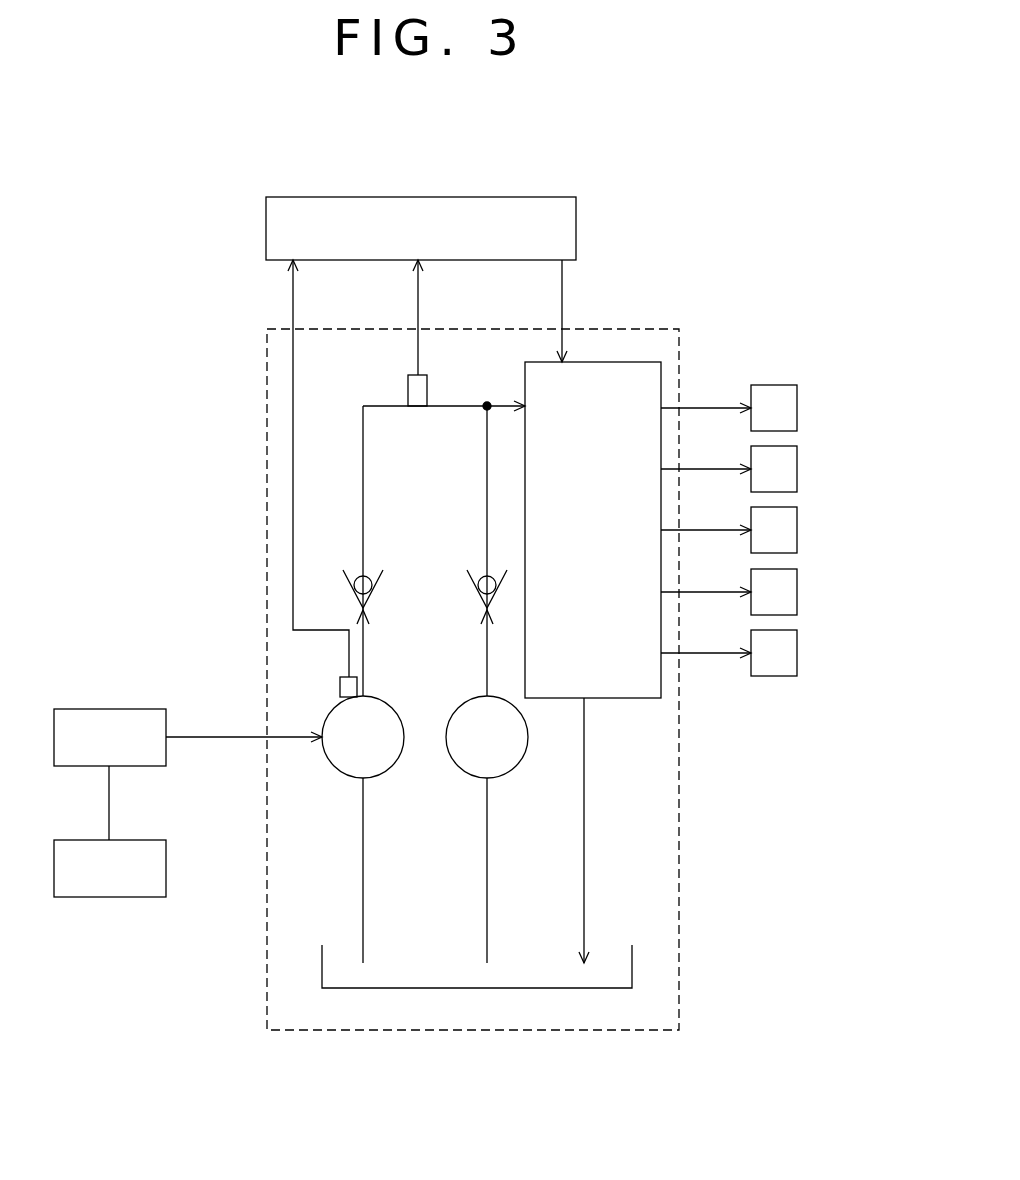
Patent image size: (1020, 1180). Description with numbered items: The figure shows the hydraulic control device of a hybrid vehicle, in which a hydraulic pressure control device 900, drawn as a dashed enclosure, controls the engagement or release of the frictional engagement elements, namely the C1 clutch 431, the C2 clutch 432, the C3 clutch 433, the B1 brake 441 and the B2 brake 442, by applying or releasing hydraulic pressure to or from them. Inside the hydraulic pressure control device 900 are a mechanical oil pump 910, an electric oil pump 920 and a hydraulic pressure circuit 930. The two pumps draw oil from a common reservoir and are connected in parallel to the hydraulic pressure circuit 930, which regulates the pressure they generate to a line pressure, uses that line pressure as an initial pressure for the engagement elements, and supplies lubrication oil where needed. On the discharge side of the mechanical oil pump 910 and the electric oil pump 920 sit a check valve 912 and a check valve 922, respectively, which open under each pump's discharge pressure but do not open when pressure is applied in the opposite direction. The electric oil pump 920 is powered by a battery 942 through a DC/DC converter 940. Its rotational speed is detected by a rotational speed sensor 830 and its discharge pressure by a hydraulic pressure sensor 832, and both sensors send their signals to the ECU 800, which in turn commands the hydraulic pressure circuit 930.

The ECU 800 is at (537, 197).
The hydraulic pressure control device 900 is at (610, 329).
The hydraulic pressure circuit 930 is at (616, 698).
The hydraulic pressure sensor 832 is at (408, 381).
The rotational speed sensor 830 is at (340, 690).
The electric oil pump 920 is at (335, 772).
The mechanical oil pump 910 is at (459, 772).
The check valve 922 is at (357, 575).
The check valve 912 is at (481, 575).
The DC/DC converter 940 is at (95, 709).
The battery 942 is at (95, 840).
The C1 clutch 431 is at (826, 380).
The C2 clutch 432 is at (826, 441).
The C3 clutch 433 is at (826, 502).
The B1 brake 441 is at (826, 564).
The B2 brake 442 is at (826, 625).